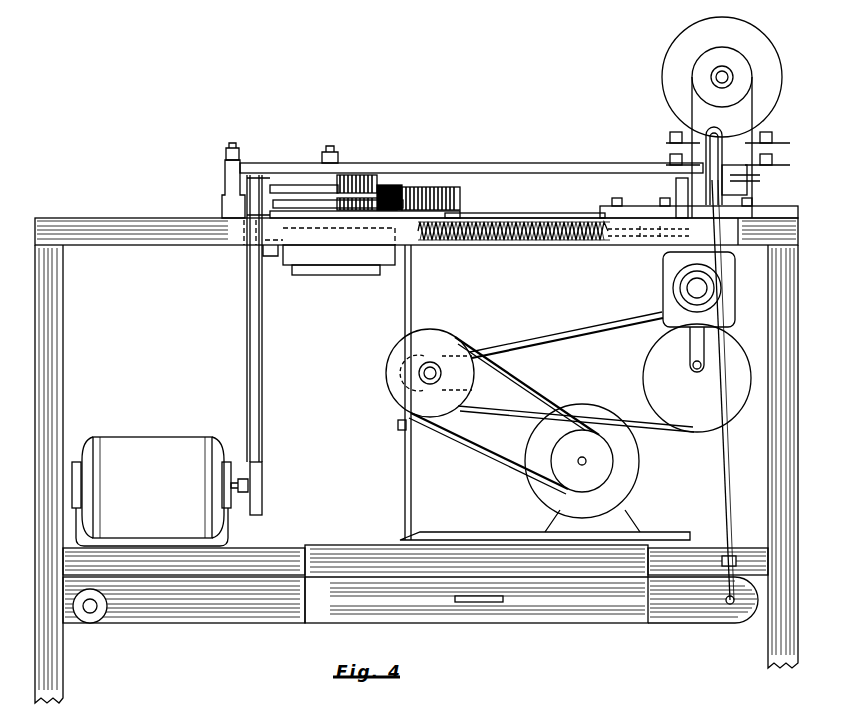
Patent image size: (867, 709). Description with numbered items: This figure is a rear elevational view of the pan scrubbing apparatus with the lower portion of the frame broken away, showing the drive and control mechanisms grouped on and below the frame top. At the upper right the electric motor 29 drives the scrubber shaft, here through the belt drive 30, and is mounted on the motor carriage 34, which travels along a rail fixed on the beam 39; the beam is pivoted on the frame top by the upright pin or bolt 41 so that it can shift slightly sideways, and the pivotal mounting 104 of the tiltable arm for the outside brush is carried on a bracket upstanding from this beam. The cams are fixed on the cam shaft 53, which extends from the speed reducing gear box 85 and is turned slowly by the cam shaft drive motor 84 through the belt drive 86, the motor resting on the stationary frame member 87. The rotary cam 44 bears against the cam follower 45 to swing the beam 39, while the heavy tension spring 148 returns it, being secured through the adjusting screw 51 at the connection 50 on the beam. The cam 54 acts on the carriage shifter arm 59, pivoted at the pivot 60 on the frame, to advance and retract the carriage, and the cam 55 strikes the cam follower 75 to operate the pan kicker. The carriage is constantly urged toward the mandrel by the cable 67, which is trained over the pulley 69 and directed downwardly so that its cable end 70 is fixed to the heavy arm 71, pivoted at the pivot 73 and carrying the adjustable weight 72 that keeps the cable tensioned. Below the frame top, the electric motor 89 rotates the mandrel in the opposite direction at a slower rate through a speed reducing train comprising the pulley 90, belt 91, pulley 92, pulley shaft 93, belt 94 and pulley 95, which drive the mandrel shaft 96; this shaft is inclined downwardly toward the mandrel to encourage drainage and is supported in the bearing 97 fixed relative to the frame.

The electric motor 29 is at (750, 40).
The belt drive 30 is at (748, 107).
The motor carriage 34 is at (666, 141).
The beam 39 is at (762, 216).
The upright pin or bolt 41 is at (742, 245).
The rotary cam 44 is at (275, 206).
The cam follower 45 is at (460, 210).
The spring connection on beam 50 is at (665, 258).
The adjusting screw 51 is at (632, 244).
The cam shaft 53 is at (340, 178).
The cam 54 is at (305, 185).
The cam 55 is at (380, 196).
The carriage shifter arm 59 is at (541, 163).
The pivot 60 is at (232, 143).
The cable 67 is at (724, 433).
The pulley 69 is at (760, 185).
The cable end 70 is at (732, 606).
The heavy arm 71 is at (675, 620).
The adjustable weight 72 is at (575, 620).
The pivot of weighted arm 73 is at (92, 615).
The cam follower 75 is at (432, 200).
The cam shaft drive motor 84 is at (152, 440).
The speed reducing gear box 85 is at (283, 262).
The belt drive 86 is at (258, 367).
The stationary frame member 87 is at (270, 548).
The electric motor 89 is at (625, 480).
The pulley 90 is at (610, 458).
The belt 91 is at (490, 445).
The pulley 92 is at (450, 342).
The pulley shaft 93 is at (472, 388).
The belt 94 is at (566, 340).
The pulley 95 is at (650, 367).
The mandrel shaft 96 is at (694, 352).
The bearing 97 is at (690, 288).
The pivotal mounting 104 is at (676, 190).
The tension spring 148 is at (570, 243).